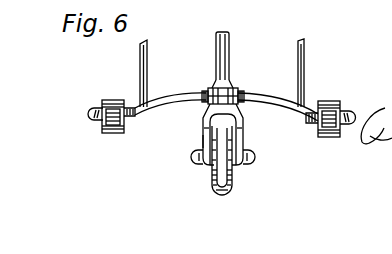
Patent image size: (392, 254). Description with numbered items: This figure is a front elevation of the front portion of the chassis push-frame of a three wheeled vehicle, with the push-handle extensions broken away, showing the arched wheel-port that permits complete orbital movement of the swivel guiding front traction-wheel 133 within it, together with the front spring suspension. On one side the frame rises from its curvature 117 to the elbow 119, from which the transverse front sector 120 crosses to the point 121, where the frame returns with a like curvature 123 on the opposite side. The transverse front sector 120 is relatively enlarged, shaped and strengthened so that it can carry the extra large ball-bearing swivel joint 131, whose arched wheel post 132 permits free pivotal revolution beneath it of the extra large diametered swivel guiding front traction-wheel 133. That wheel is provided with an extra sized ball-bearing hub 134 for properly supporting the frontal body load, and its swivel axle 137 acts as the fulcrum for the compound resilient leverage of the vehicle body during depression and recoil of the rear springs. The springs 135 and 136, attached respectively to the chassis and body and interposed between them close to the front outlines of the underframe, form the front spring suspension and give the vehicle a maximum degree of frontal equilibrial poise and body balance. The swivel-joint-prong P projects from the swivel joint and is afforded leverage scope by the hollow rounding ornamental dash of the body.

The curvature 117 is at (139, 58).
The elbow 119 is at (92, 110).
The transverse front sector 120 is at (262, 97).
The point 121 is at (352, 112).
The curvature 123 is at (305, 51).
The ball-bearing swivel joint 131 is at (236, 92).
The arched wheel post 132 is at (177, 101).
The swivel guiding front traction-wheel 133 is at (209, 173).
The ball-bearing hub 134 is at (234, 170).
The spring 135 is at (113, 116).
The spring 136 is at (329, 120).
The swivel axle 137 is at (243, 152).
The swivel-joint-prong P is at (204, 140).